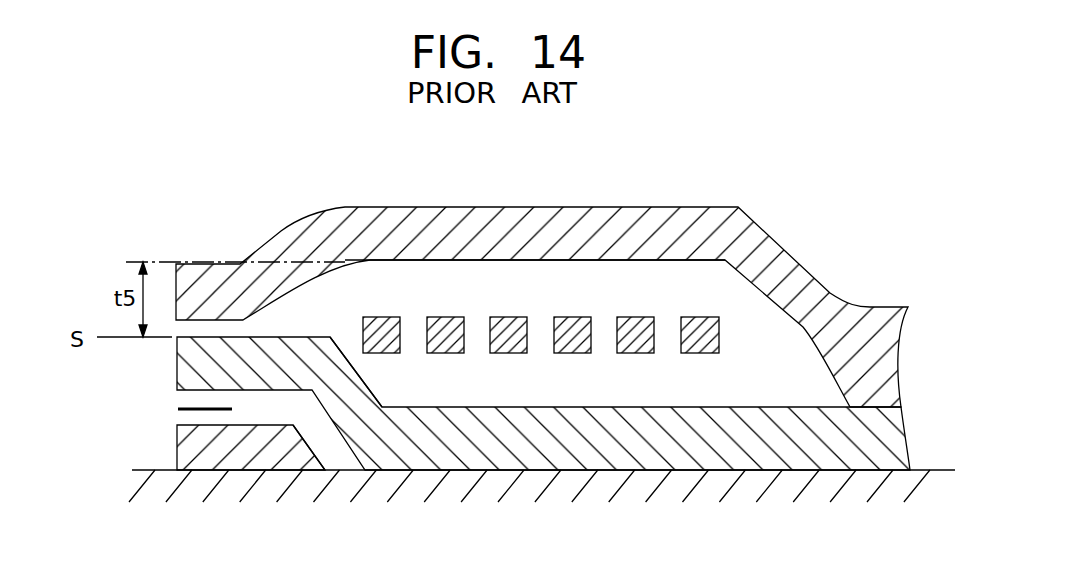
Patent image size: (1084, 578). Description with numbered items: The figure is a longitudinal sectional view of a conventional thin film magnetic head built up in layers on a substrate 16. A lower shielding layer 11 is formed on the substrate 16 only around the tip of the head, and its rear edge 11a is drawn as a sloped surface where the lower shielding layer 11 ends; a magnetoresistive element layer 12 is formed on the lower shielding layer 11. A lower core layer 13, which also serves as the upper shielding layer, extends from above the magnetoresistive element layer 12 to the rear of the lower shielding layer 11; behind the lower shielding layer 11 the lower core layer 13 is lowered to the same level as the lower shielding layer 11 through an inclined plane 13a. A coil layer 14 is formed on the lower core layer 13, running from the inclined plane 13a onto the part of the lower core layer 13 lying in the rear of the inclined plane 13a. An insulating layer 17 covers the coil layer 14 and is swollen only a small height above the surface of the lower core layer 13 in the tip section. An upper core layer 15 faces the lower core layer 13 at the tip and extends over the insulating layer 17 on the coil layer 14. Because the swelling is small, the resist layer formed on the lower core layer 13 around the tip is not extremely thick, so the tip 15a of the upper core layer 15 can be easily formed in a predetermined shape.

The lower shielding layer 11 is at (230, 460).
The inclined surface of lower block 11a is at (305, 443).
The magnetoresistive element layer 12 is at (202, 402).
The lower core layer 13 is at (552, 433).
The inclined plane 13a is at (333, 373).
The coil layer 14 is at (386, 325).
The upper core layer 15 is at (515, 240).
The tip 15a is at (207, 285).
The substrate 16 is at (942, 488).
The insulating layer 17 is at (605, 293).